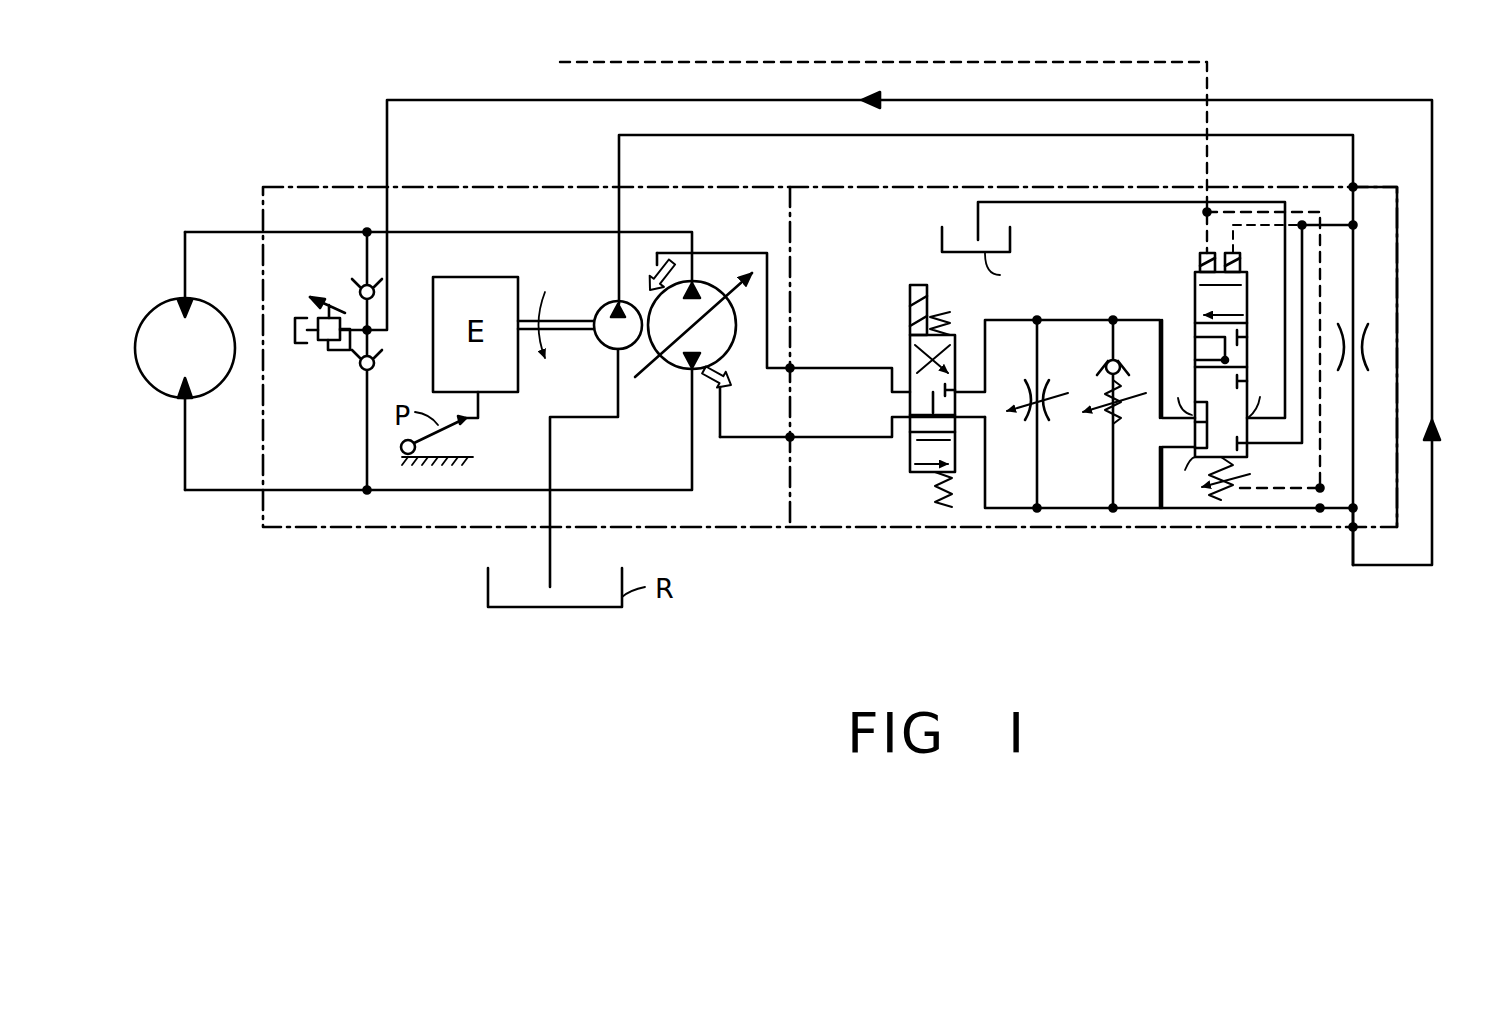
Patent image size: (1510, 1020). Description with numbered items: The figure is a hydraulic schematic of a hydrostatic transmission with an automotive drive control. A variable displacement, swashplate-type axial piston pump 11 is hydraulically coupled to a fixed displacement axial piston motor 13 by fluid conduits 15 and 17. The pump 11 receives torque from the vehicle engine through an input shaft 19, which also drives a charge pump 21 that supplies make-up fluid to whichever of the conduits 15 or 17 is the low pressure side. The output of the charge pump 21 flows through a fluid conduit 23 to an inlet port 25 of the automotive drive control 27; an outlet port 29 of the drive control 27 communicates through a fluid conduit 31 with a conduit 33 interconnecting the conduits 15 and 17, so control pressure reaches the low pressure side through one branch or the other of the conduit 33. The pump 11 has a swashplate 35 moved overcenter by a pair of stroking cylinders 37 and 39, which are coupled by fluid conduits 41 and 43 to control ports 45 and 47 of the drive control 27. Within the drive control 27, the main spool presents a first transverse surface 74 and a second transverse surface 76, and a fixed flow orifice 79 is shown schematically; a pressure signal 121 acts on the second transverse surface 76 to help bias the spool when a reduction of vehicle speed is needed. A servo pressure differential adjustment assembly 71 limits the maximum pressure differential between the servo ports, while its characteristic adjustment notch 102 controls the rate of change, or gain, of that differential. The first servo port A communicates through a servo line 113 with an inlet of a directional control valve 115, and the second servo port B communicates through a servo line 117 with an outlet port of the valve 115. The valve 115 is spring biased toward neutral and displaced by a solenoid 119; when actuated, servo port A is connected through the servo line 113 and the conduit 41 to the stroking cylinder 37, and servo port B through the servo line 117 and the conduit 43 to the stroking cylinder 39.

The axial piston pump 11 is at (672, 368).
The axial piston motor 13 is at (168, 395).
The fluid conduit 15 is at (478, 232).
The fluid conduit 17 is at (430, 492).
The input shaft 19 is at (580, 336).
The charge pump 21 is at (600, 305).
The fluid conduit 23 is at (778, 140).
The inlet port 25 is at (1357, 187).
The automotive drive control 27 is at (1222, 182).
The outlet port 29 is at (1352, 531).
The fluid conduit 31 is at (387, 146).
The conduit 33 is at (367, 458).
The swashplate 35 is at (733, 292).
The stroking cylinder 37 is at (646, 277).
The stroking cylinder 39 is at (733, 367).
The fluid conduit 41 is at (770, 300).
The fluid conduit 43 is at (778, 440).
The control port 45 is at (803, 366).
The control port 47 is at (790, 440).
The servo pressure differential adjustment assembly 71 is at (1125, 434).
The first transverse surface 74 is at (1240, 268).
The second transverse surface 76 is at (1201, 257).
The fixed flow orifice 79 is at (1377, 344).
The characteristic adjustment notch 102 is at (1050, 437).
The servo line 113 is at (1043, 320).
The directional control valve 115 is at (921, 480).
The servo line 117 is at (995, 510).
The solenoid 119 is at (908, 298).
The pressure signal 121 is at (685, 62).